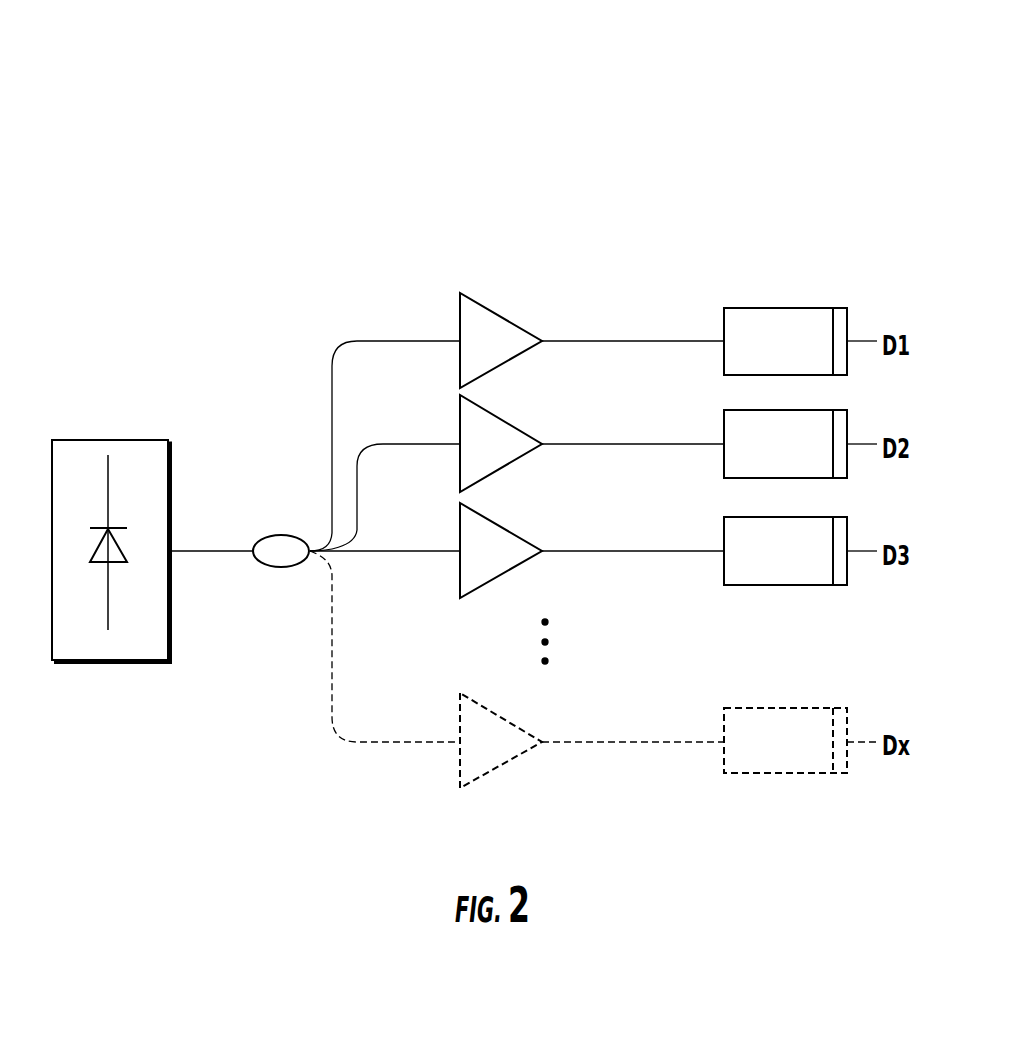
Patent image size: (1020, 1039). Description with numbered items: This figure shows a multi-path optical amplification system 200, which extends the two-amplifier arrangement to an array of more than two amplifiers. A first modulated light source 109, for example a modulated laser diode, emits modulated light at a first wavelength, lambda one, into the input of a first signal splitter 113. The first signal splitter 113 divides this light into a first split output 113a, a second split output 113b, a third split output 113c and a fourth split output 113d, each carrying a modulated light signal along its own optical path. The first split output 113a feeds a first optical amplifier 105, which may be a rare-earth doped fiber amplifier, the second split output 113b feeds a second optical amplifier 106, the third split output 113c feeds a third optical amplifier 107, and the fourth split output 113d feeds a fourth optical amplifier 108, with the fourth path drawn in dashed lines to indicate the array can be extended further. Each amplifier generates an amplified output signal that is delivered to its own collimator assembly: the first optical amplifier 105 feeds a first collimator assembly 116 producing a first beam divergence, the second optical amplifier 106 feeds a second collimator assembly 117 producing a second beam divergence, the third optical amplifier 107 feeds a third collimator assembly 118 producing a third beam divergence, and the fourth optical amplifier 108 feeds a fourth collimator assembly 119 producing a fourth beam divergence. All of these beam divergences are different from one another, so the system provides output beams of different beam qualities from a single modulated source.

The multi-path optical amplification system 200 is at (832, 110).
The first modulated light source 109 is at (88, 661).
The first signal splitter 113 is at (285, 568).
The first split output 113a is at (325, 545).
The second split output 113b is at (342, 540).
The third split output 113c is at (357, 553).
The fourth split output 113d is at (327, 557).
The first optical amplifier 105 is at (505, 313).
The second optical amplifier 106 is at (505, 418).
The third optical amplifier 107 is at (505, 525).
The fourth optical amplifier 108 is at (505, 716).
The first collimator assembly 116 is at (780, 307).
The second collimator assembly 117 is at (780, 409).
The third collimator assembly 118 is at (780, 516).
The fourth collimator assembly 119 is at (780, 707).